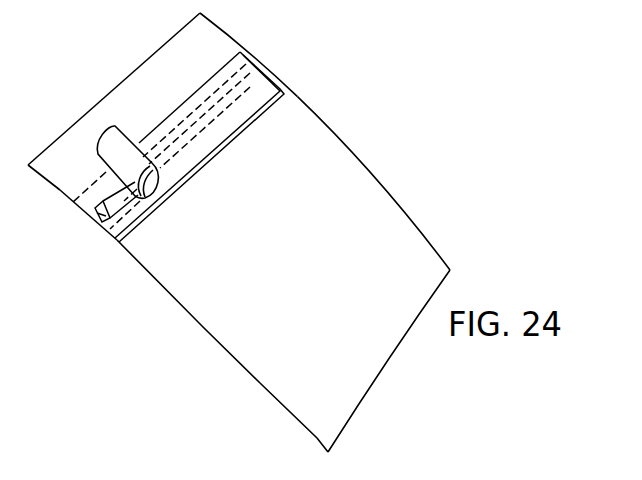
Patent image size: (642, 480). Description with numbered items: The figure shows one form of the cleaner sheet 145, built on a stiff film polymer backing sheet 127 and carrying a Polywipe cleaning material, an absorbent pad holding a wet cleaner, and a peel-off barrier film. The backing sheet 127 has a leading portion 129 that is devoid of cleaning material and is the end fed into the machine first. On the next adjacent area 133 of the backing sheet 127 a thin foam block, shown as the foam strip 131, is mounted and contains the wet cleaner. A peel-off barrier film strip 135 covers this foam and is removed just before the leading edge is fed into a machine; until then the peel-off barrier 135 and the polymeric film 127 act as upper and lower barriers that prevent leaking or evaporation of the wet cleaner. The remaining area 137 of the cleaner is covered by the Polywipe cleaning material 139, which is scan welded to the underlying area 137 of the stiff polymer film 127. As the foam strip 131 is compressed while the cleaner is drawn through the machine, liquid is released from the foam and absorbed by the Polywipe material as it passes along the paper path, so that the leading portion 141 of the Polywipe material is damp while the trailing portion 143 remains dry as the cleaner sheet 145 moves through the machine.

The stiff film polymer backing sheet 127 is at (38, 180).
The leading portion 129 is at (201, 16).
The foam strip 131 is at (97, 217).
The next adjacent area 133 is at (82, 216).
The peel-off barrier film strip 135 is at (112, 126).
The remaining area 137 is at (204, 327).
The Polywipe cleaning material 139 is at (300, 378).
The leading portion of the Polywipe material 141 is at (282, 118).
The trailing portion 143 is at (418, 260).
The cleaner sheet 145 is at (154, 33).